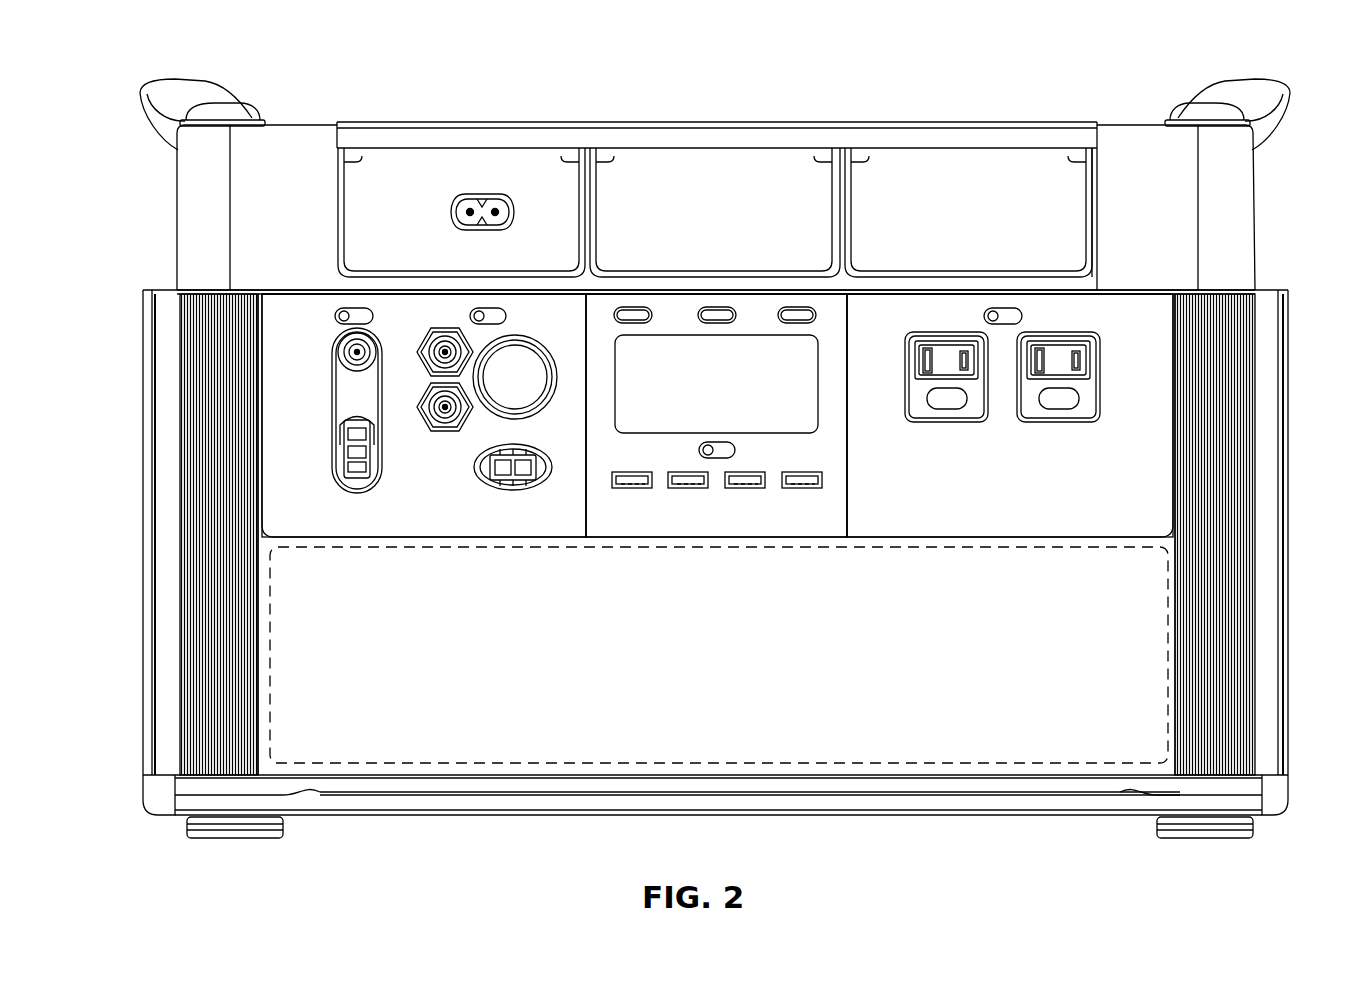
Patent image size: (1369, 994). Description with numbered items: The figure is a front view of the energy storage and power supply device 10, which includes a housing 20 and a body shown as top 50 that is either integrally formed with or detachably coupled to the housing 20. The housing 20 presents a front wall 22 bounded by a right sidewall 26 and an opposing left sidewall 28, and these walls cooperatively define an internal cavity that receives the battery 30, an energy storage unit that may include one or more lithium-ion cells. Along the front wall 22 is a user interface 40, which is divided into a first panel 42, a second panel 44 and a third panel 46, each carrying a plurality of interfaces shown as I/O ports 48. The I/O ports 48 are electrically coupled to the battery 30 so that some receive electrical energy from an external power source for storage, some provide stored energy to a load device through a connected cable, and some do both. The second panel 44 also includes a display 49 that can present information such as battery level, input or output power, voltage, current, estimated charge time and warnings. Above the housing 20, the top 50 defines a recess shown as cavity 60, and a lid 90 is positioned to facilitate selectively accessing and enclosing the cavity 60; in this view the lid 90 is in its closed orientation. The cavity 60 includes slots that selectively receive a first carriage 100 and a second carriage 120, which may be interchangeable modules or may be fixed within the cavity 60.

The energy storage and power supply device 10 is at (110, 68).
The housing 20 is at (140, 710).
The front wall 22 is at (755, 723).
The right sidewall 26 is at (148, 540).
The left sidewall 28 is at (1283, 505).
The battery 30 is at (450, 765).
The user interface 40 is at (737, 548).
The first panel 42 is at (973, 514).
The second panel 44 is at (805, 514).
The third panel 46 is at (428, 514).
The I/O ports 48 is at (333, 410).
The display 49 is at (822, 383).
The top 50 is at (170, 213).
The cavity 60 is at (1100, 170).
The lid 90 is at (713, 130).
The first carriage 100 is at (952, 183).
The second carriage 120 is at (400, 183).